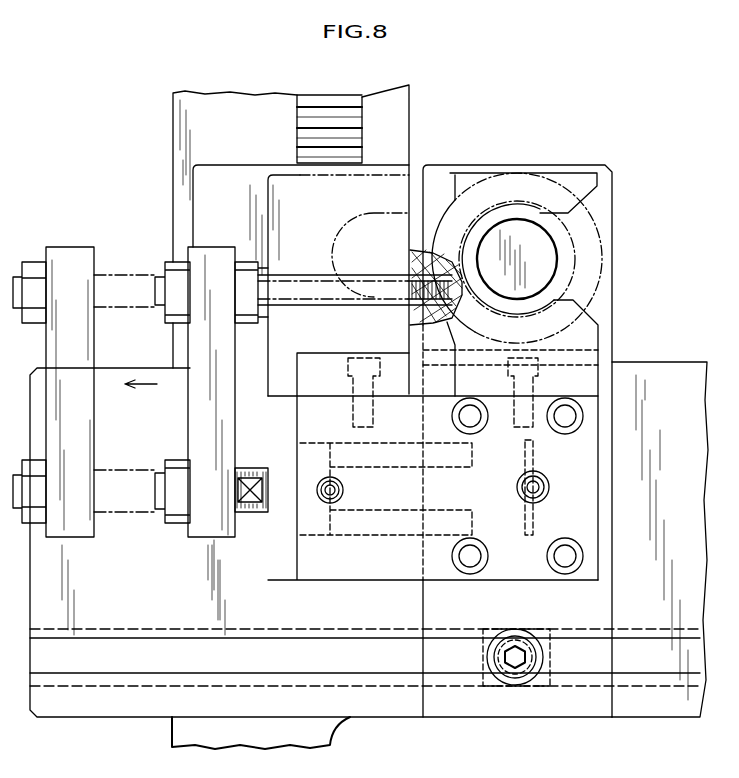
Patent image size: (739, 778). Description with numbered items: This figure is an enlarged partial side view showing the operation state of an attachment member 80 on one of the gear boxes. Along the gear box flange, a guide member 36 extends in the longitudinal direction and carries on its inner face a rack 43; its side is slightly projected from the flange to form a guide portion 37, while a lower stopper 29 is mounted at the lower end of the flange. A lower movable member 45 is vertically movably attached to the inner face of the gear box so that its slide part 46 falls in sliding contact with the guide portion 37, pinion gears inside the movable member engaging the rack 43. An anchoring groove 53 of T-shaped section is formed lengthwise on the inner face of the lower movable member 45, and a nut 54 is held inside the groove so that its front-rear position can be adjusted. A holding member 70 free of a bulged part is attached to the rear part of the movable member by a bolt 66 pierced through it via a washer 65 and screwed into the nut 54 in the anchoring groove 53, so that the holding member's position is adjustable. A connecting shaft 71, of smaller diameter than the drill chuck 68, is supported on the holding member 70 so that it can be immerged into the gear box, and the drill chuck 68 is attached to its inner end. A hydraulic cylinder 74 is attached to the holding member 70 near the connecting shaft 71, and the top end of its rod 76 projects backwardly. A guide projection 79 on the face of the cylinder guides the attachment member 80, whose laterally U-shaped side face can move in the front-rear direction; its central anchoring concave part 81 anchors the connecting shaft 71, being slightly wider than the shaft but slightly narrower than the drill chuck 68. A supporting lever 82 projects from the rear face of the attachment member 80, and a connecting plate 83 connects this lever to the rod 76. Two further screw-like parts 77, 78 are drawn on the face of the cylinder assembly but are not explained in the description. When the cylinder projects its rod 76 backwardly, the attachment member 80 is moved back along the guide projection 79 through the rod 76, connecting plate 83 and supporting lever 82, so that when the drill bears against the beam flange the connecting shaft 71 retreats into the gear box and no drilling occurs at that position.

The lower stopper 29 is at (174, 737).
The guide member 36 is at (400, 140).
The guide portion 37 is at (180, 120).
The rack 43 is at (355, 135).
The lower movable member 45 is at (666, 374).
The slide part 46 is at (136, 372).
The anchoring groove 53 is at (163, 648).
The nut 54 is at (540, 629).
The washer 65 is at (500, 634).
The bolt 66 is at (514, 650).
The drill chuck 68 is at (528, 180).
The holding member 70 is at (602, 180).
The connecting shaft 71 is at (545, 258).
The hydraulic cylinder 74 is at (588, 435).
The rod 76 is at (383, 505).
The adjusting screw 77 is at (545, 481).
The set screw 78 is at (344, 492).
The guide projection 79 is at (392, 360).
The attachment member 80 is at (490, 182).
The anchoring concave part 81 is at (548, 212).
The supporting lever 82 is at (299, 276).
The connecting plate 83 is at (190, 423).